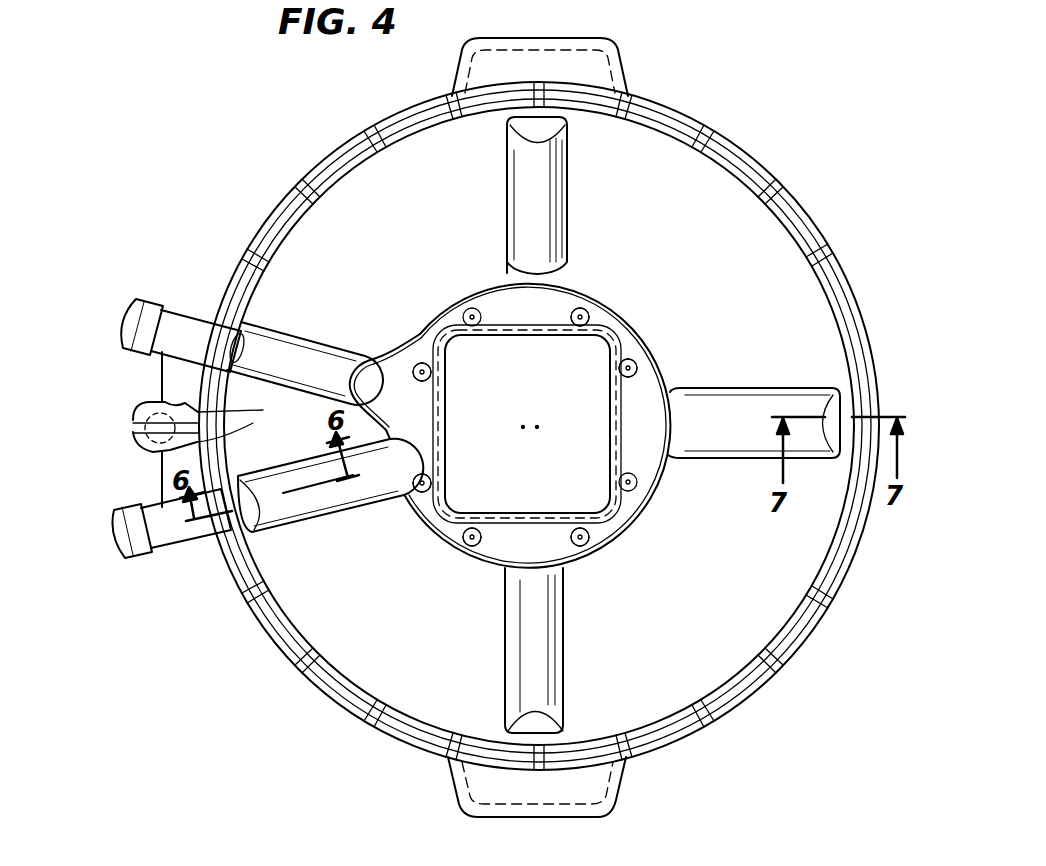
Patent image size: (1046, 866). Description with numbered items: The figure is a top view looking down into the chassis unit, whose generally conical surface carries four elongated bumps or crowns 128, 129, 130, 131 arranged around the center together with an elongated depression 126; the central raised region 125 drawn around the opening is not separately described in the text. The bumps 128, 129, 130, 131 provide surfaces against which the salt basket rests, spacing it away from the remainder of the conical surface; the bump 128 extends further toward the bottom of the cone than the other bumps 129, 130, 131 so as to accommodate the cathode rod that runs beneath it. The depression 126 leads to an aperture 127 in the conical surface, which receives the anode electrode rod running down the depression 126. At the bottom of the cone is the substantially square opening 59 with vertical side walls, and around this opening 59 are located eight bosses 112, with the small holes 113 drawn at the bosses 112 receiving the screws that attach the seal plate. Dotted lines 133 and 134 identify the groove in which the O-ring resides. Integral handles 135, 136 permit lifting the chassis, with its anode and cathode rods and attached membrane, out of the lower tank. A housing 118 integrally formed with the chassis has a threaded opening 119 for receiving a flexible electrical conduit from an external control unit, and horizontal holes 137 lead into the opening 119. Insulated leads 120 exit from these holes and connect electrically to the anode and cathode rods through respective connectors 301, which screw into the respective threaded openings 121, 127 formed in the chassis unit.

The square opening 59 is at (600, 500).
The bosses 112 is at (431, 483).
The mounting holes 113 is at (572, 316).
The housing 118 is at (135, 404).
The threaded opening 119 is at (133, 428).
The insulated leads 120 is at (160, 378).
The threaded opening 121 is at (233, 542).
The hub boss 125 is at (380, 357).
The elongated depression 126 is at (333, 357).
The aperture 127 is at (256, 349).
The bump 128 is at (337, 490).
The bump 129 is at (548, 644).
The bump 130 is at (571, 198).
The bump 131 is at (758, 403).
The dotted line 133 is at (623, 350).
The dotted line 134 is at (603, 333).
The integral handle 135 is at (623, 779).
The integral handle 136 is at (617, 50).
The horizontal holes 137 is at (251, 419).
The connectors 301 is at (178, 303).